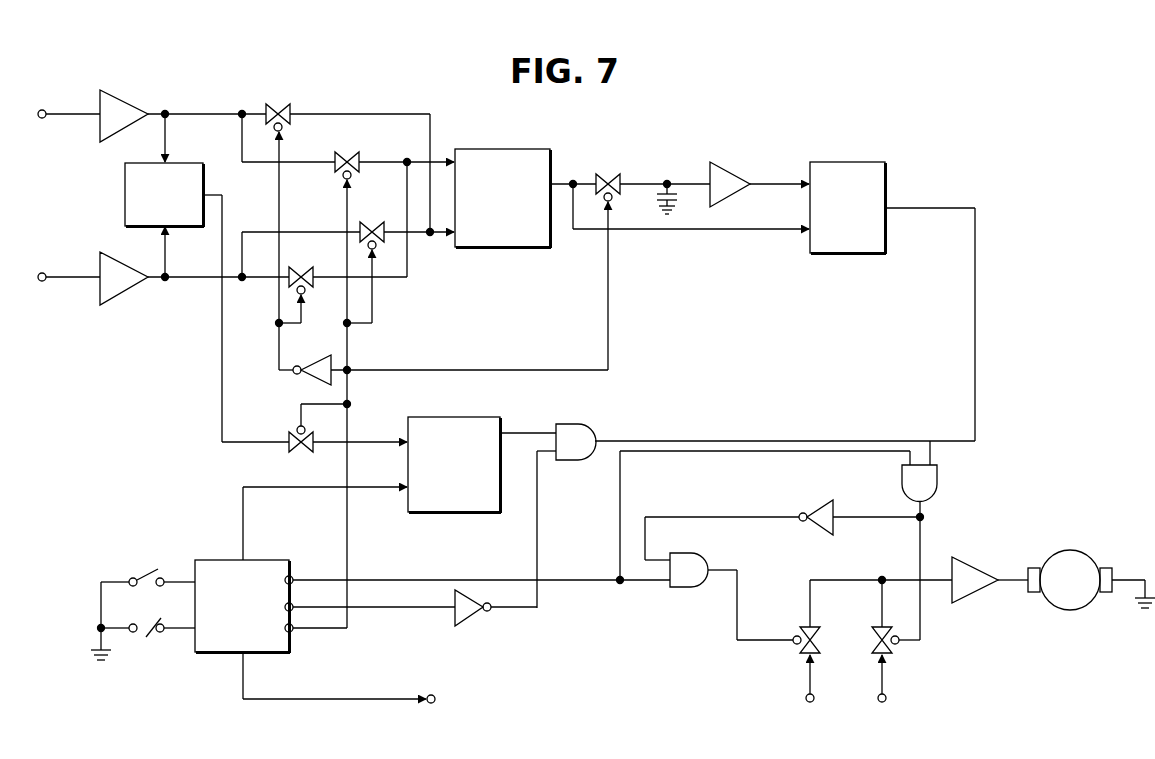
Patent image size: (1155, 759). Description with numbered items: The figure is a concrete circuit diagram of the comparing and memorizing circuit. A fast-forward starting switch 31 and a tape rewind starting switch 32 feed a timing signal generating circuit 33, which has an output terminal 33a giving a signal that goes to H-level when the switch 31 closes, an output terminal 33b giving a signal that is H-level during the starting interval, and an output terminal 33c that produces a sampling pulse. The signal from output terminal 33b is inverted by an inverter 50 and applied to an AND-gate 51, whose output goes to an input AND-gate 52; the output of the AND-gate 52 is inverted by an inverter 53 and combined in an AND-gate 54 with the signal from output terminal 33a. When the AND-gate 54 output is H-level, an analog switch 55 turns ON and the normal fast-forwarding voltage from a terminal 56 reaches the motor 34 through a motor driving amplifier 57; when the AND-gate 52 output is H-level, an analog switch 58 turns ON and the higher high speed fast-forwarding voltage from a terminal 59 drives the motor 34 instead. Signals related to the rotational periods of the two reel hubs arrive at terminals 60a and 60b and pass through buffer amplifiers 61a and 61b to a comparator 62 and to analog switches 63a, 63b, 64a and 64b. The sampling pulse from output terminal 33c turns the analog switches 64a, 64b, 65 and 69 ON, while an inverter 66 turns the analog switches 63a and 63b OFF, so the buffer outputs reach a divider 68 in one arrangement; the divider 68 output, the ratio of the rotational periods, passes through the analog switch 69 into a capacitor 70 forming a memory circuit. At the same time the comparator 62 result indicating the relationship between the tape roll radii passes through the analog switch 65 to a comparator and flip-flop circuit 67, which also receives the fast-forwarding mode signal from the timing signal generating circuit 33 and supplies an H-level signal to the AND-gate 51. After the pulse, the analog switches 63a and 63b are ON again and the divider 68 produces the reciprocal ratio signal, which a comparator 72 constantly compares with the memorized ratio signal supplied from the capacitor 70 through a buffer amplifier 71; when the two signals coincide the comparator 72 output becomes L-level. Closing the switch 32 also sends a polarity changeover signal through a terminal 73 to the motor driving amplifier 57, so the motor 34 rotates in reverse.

The switch 31 is at (145, 572).
The tape rewind starting switch 32 is at (146, 640).
The timing signal generating circuit 33 is at (214, 560).
The output terminal 33a is at (293, 576).
The output terminal 33b is at (293, 609).
The output terminal 33c is at (294, 632).
The motor 34 is at (1071, 550).
The inverter 50 is at (462, 620).
The AND-gate 51 is at (573, 425).
The input AND-gate 52 is at (940, 482).
The inverter 53 is at (817, 504).
The AND-gate 54 is at (692, 596).
The analog switch 55 is at (800, 652).
The terminal 56 is at (806, 698).
The motor driving amplifier 57 is at (975, 560).
The analog switch 58 is at (888, 652).
The terminal 59 is at (886, 698).
The terminal 60a is at (65, 120).
The terminal 60b is at (42, 273).
The buffer amplifier 61a is at (122, 95).
The buffer amplifier 61b is at (110, 304).
The comparator 62 is at (190, 163).
The analog switch 63a is at (282, 102).
The analog switch 63b is at (303, 266).
The analog switch 64a is at (345, 150).
The analog switch 64b is at (372, 220).
The analog switch 65 is at (288, 436).
The inverter 66 is at (320, 363).
The comparator and flip-flop circuit 67 is at (455, 417).
The divider 68 is at (497, 149).
The analog switch 69 is at (608, 172).
The capacitor 70 is at (656, 198).
The buffer amplifier 71 is at (722, 160).
The comparator 72 is at (838, 162).
The terminal 73 is at (436, 696).